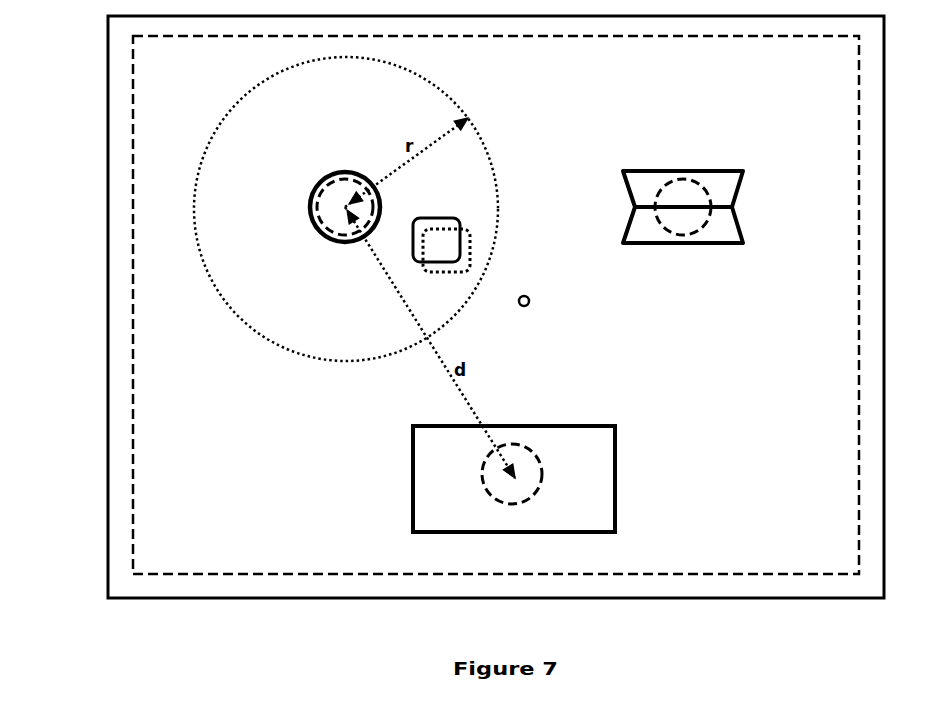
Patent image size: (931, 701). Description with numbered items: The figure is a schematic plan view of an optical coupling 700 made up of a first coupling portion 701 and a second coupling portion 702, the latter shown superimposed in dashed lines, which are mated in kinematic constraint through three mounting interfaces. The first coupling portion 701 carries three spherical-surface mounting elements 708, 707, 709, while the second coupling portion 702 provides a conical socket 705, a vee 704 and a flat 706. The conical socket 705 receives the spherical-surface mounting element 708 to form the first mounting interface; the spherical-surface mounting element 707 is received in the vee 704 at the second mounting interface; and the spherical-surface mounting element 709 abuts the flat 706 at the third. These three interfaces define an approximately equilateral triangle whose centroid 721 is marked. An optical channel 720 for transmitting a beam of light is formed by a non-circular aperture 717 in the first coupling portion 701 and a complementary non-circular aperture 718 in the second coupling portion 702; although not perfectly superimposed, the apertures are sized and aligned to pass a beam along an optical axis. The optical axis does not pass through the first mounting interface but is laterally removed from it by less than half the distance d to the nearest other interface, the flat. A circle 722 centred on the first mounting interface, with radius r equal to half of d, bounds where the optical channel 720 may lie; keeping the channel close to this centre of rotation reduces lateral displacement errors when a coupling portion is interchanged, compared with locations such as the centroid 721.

The optical coupling 700 is at (90, 107).
The first coupling portion 701 is at (118, 330).
The second coupling portion 702 is at (160, 386).
The vee 704 is at (719, 233).
The conical socket 705 is at (310, 207).
The flat 706 is at (435, 481).
The spherical-surface mounting element 707 is at (683, 237).
The spherical-surface mounting element 708 is at (318, 233).
The spherical-surface mounting element 709 is at (487, 493).
The non-circular aperture 717 is at (442, 218).
The non-circular aperture 718 is at (447, 272).
The optical channel 720 is at (448, 247).
The centroid 721 is at (529, 306).
The circle 722 is at (485, 138).